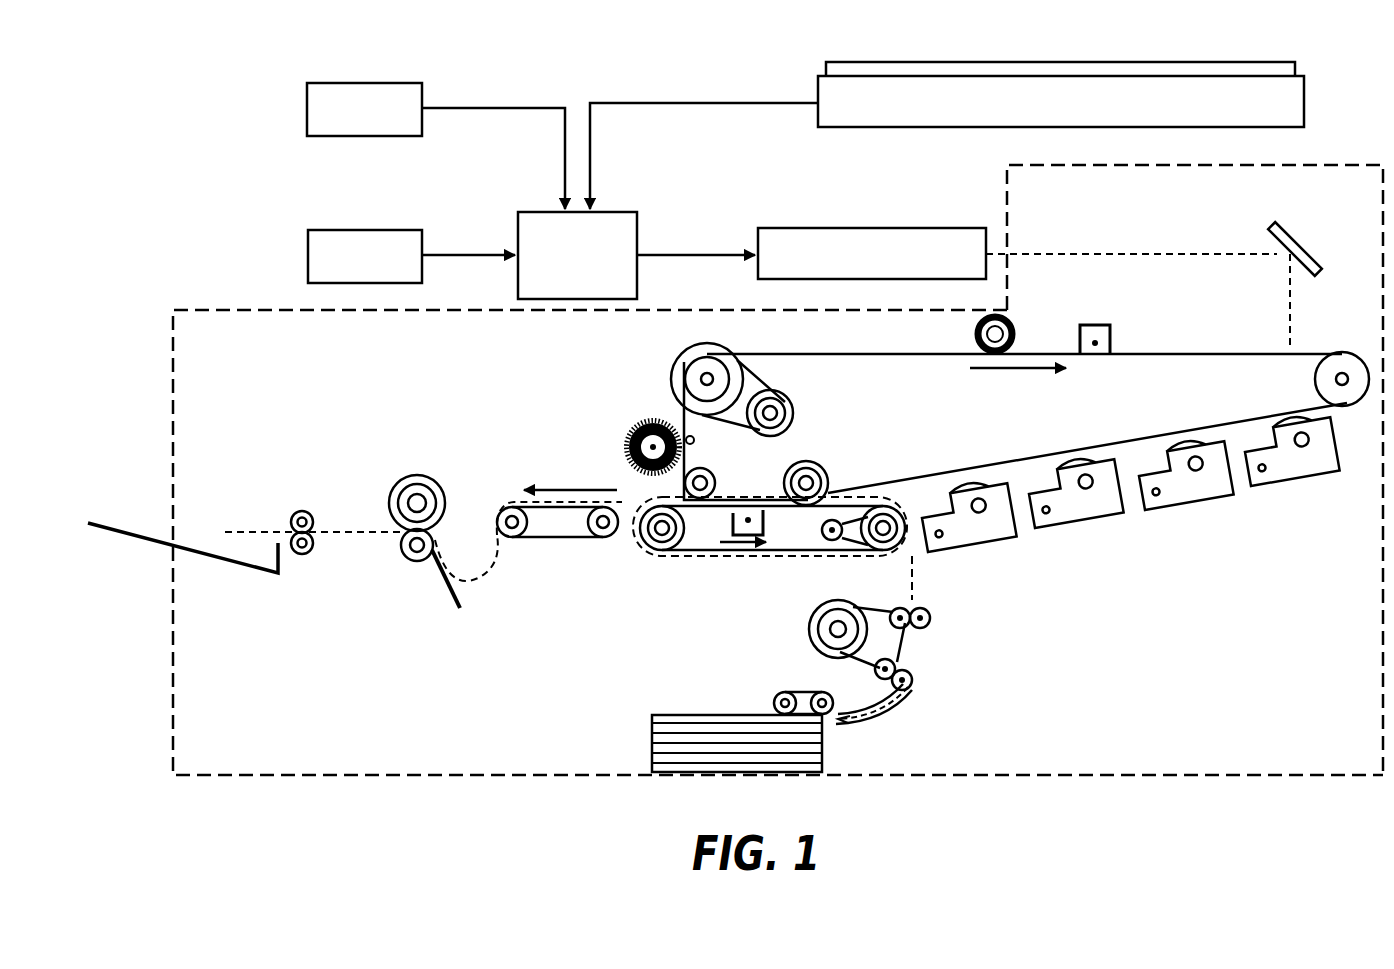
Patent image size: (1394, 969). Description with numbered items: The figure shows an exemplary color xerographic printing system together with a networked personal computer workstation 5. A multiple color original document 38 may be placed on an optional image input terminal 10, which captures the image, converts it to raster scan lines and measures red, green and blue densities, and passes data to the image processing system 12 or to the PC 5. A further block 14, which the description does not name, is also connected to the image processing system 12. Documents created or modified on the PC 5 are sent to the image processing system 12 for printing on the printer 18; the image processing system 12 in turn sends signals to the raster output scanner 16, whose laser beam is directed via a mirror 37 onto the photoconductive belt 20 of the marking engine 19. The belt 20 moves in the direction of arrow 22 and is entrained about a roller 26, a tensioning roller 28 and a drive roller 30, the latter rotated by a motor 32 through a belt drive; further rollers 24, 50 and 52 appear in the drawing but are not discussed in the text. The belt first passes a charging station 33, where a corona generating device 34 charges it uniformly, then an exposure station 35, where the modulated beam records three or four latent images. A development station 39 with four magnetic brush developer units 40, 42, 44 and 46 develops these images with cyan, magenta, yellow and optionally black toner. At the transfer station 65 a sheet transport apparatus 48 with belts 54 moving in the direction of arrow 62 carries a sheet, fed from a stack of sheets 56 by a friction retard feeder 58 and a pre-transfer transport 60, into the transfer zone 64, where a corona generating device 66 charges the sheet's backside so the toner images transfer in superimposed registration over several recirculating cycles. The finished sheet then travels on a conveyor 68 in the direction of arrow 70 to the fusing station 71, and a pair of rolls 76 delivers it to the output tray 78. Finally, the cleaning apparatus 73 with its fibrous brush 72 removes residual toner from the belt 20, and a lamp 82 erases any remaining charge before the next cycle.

The personal computer workstation 5 is at (306, 70).
The image input terminal 10 is at (1007, 63).
The image processing system 12 is at (626, 191).
The user interface (UI) 14 is at (406, 212).
The raster output scanner 16 is at (806, 217).
The printer 18 is at (1323, 146).
The marking engine 19 is at (197, 307).
The photoconductive belt 20 is at (1192, 352).
The arrow 22 is at (1005, 375).
The stripping roller 24 is at (712, 472).
The roller 26 is at (833, 478).
The tensioning roller 28 is at (1318, 378).
The drive roller 30 is at (680, 365).
The motor 32 is at (790, 400).
The charging station 33 is at (1121, 310).
The corona generating device 34 is at (1095, 322).
The exposure station 35 is at (1168, 271).
The mirror 37 is at (1292, 235).
The original document 38 is at (1210, 68).
The development station 39 is at (1128, 547).
The developer unit 40 is at (1295, 487).
The developer unit 42 is at (1187, 507).
The developer unit 44 is at (1078, 530).
The developer unit 46 is at (983, 548).
The sheet transport apparatus 48 is at (756, 572).
The transfer belt roller 50 is at (652, 555).
The transfer belt roller 52 is at (880, 552).
The belts 54 is at (828, 555).
The stack of sheets 56 is at (685, 712).
The friction retard feeder 58 is at (795, 690).
The pre-transfer transport 60 is at (910, 672).
The arrow 62 is at (738, 555).
The transfer zone 64 is at (753, 494).
The transfer station 65 is at (766, 509).
The corona generating device 66 is at (724, 529).
The conveyor 68 is at (560, 540).
The arrow 70 is at (560, 485).
The fusing station 71 is at (417, 468).
The fibrous brush 72 is at (625, 430).
The photoreceptor cleaning apparatus 73 is at (623, 407).
The pair of rolls 76 is at (302, 510).
The output tray 78 is at (242, 570).
The lamp 82 is at (975, 335).